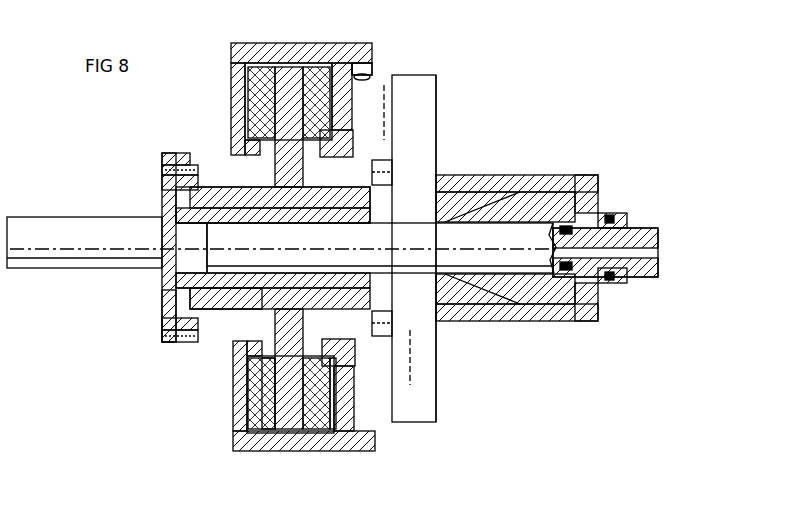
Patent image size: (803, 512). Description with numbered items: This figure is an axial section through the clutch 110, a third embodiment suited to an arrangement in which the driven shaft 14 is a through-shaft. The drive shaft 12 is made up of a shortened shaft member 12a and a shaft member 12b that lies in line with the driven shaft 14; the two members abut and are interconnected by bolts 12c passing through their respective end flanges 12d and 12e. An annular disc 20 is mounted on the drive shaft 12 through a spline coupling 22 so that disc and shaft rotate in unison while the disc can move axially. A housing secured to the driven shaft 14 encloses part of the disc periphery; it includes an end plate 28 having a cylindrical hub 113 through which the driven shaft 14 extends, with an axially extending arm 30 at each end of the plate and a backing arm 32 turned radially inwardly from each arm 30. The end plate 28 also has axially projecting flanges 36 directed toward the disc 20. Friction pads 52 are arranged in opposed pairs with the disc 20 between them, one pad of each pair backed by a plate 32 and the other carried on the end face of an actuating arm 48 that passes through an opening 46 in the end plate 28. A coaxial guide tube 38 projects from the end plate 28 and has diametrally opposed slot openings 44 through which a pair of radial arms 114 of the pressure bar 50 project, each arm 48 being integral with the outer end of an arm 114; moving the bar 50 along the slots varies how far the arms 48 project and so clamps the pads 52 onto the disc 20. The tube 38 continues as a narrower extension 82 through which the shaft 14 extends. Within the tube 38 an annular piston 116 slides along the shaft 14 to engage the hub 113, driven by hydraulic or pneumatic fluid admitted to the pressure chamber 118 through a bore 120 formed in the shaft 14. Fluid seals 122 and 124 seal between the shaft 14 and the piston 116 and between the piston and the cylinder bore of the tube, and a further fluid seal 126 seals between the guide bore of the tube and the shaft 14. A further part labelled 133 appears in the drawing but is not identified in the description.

The drive shaft 12 is at (219, 178).
The shortened shaft member 12a is at (212, 187).
The shaft member 12b is at (94, 232).
The bolts 12c is at (188, 152).
The end flange 12d is at (180, 345).
The end flange 12e is at (162, 334).
The driven shaft 14 is at (290, 249).
The annular disc 20 is at (289, 440).
The spline coupling 22 is at (258, 300).
The end plate 28 is at (423, 337).
The axially extending arm 30 is at (260, 452).
The backing arm 32 is at (248, 412).
The axially projecting flange 36 is at (410, 377).
The guide tube 38 is at (525, 322).
The openings 44 is at (447, 182).
The opening 46 is at (372, 76).
The actuating arm 48 is at (340, 103).
The pressure bar 50 is at (440, 123).
The friction pads 52 is at (265, 394).
The extension 82 is at (650, 272).
The clutch 110 is at (114, 358).
The cylindrical hub 113 is at (205, 258).
The radial arms 114 is at (488, 320).
The annular piston 116 is at (578, 312).
The pressure chamber 118 is at (598, 296).
The bore 120 is at (650, 250).
The fluid seal 122 is at (566, 200).
The fluid seal 124 is at (588, 314).
The fluid seal 126 is at (615, 214).
The housing portion 133 is at (480, 200).